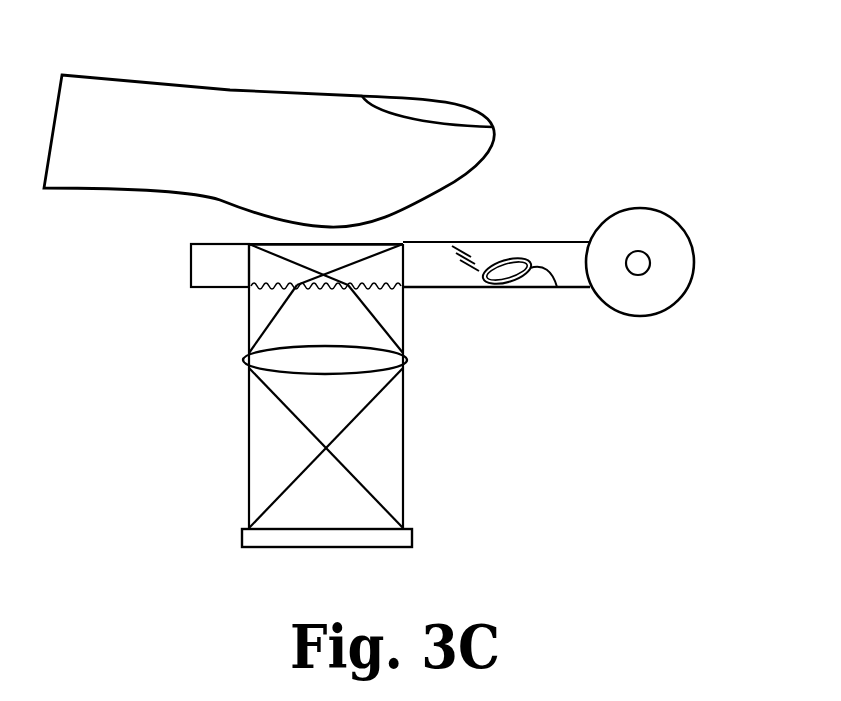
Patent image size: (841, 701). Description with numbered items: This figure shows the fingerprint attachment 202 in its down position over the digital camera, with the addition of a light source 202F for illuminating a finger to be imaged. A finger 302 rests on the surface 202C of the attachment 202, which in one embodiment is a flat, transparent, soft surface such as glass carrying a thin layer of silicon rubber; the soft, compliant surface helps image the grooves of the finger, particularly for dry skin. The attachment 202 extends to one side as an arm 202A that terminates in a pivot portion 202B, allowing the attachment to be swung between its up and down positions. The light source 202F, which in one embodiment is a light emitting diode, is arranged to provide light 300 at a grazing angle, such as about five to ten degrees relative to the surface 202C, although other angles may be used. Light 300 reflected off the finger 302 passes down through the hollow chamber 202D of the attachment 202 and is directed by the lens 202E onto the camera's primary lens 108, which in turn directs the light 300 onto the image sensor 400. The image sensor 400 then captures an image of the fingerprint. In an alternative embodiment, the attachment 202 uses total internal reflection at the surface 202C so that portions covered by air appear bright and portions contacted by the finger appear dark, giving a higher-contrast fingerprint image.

The finger 302 is at (225, 92).
The fingerprint attachment 202 is at (190, 268).
The platen arm 202A is at (563, 237).
The platen pivot 202B is at (695, 273).
The surface 202C is at (345, 240).
The hollow chamber 202D is at (368, 269).
The lens 202E is at (372, 290).
The light source 202F is at (557, 287).
The light 300 is at (262, 320).
The primary lens 108 is at (283, 373).
The image sensor 400 is at (412, 540).